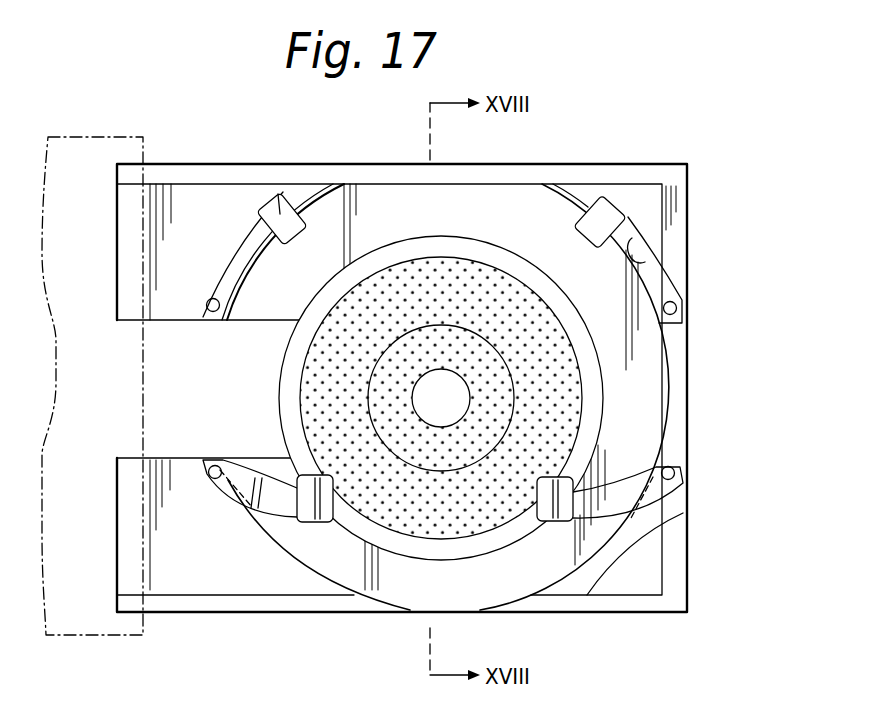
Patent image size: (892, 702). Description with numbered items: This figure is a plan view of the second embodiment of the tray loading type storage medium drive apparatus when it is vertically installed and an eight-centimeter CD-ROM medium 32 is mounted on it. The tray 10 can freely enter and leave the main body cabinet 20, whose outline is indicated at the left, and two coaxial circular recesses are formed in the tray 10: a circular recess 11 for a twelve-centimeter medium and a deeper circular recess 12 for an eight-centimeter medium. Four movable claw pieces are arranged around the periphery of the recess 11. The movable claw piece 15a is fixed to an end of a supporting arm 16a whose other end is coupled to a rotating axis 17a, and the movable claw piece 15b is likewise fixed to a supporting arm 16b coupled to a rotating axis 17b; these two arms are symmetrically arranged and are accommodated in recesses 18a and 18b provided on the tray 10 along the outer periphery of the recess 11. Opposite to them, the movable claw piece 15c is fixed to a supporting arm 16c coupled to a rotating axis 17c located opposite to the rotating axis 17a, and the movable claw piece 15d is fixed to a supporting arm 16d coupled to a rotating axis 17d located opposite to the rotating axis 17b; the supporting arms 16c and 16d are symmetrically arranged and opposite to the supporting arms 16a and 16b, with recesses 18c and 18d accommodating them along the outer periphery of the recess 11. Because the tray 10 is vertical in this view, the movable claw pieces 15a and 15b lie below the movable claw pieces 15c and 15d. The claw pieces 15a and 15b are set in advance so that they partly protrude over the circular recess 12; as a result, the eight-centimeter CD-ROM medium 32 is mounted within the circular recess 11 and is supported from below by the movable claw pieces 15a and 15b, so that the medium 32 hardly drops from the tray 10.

The tray 10 is at (689, 184).
The circular recess 11 is at (638, 354).
The circular recess 12 is at (438, 232).
The movable claw piece 15a is at (319, 523).
The movable claw piece 15b is at (596, 563).
The movable claw piece 15c is at (281, 194).
The movable claw piece 15d is at (624, 198).
The supporting arm 16a is at (240, 535).
The supporting arm 16b is at (650, 515).
The supporting arm 16c is at (225, 273).
The supporting arm 16d is at (660, 268).
The rotating axis 17a is at (210, 460).
The rotating axis 17b is at (675, 466).
The rotating axis 17c is at (209, 314).
The rotating axis 17d is at (677, 301).
The recess 18a is at (264, 505).
The recess 18b is at (642, 548).
The recess 18c is at (250, 248).
The recess 18d is at (645, 262).
The main body cabinet 20 is at (92, 137).
The 8-cm CD-ROM medium 32 is at (566, 400).